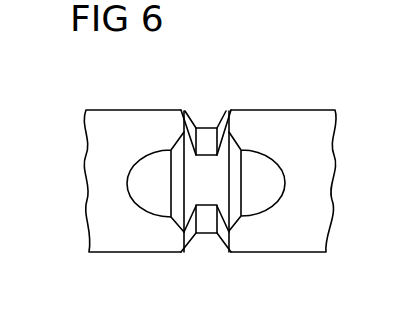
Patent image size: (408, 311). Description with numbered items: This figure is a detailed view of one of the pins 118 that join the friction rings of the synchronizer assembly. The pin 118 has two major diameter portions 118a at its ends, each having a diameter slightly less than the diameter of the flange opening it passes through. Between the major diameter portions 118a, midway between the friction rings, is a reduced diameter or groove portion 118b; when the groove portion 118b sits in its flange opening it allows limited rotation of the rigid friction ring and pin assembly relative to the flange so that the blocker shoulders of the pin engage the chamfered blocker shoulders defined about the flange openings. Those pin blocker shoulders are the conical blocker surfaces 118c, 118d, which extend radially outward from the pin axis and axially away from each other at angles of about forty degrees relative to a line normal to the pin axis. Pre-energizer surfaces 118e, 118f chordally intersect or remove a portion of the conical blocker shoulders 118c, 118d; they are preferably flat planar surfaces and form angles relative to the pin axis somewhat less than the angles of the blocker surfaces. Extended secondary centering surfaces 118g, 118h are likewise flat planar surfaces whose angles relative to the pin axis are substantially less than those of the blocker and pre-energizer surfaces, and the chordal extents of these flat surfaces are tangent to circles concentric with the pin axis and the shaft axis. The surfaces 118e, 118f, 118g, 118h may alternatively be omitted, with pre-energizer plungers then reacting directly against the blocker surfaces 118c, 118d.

The pin 118 is at (80, 255).
The major diameter portions 118a is at (108, 110).
The reduced diameter or groove portion 118b is at (205, 127).
The conical blocker shoulder 118c is at (188, 115).
The conical blocker shoulder 118d is at (223, 113).
The pre-energizer surface 118e is at (176, 214).
The pre-energizer surface 118f is at (236, 215).
The extended secondary centering surface 118g is at (138, 187).
The extended secondary centering surface 118h is at (257, 173).